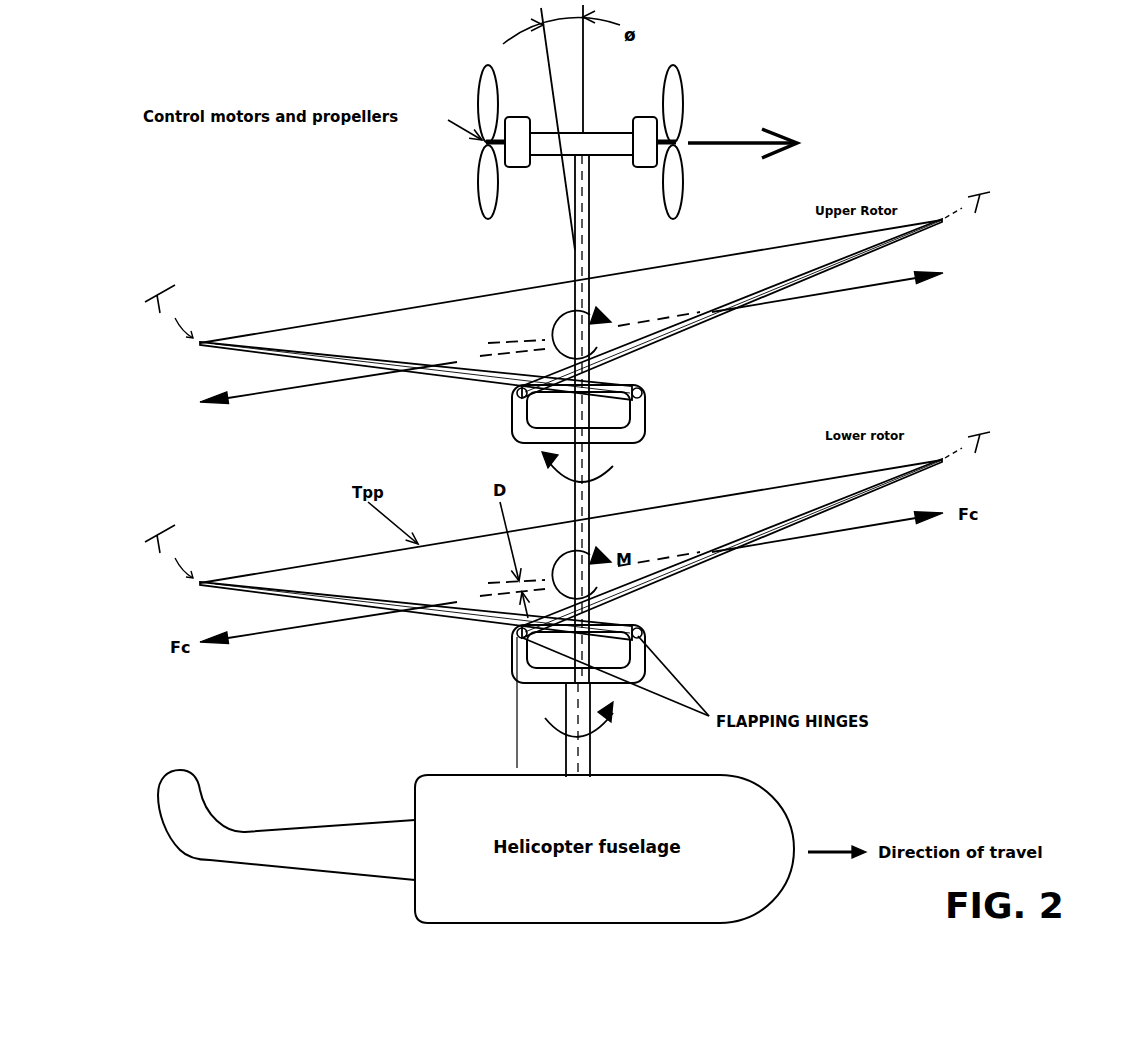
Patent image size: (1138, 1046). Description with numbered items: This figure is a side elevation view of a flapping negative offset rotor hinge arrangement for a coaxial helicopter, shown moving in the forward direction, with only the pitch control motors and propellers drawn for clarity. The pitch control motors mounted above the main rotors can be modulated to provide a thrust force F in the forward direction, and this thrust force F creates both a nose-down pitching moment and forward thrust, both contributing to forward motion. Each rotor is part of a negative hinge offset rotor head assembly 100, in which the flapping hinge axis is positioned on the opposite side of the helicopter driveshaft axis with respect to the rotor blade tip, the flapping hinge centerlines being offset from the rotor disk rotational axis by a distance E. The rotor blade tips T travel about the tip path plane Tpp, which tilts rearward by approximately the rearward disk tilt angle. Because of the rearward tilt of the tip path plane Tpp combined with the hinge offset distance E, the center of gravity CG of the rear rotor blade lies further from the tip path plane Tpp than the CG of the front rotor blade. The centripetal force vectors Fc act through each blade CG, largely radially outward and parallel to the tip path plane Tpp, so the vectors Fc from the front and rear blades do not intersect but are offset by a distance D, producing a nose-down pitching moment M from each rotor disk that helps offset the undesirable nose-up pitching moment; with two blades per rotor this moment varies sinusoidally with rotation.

The negative hinge offset rotor head assembly 100 is at (680, 403).
The thrust force F is at (759, 143).
The centripetal force vectors Fc is at (574, 341).
The tip path plane Tpp is at (418, 304).
The offset distance D is at (528, 378).
The nose-down pitching moment M is at (592, 333).
The center of gravity CG is at (411, 373).
The rotor blade tips T is at (567, 265).
The hinge offset distance E is at (578, 750).